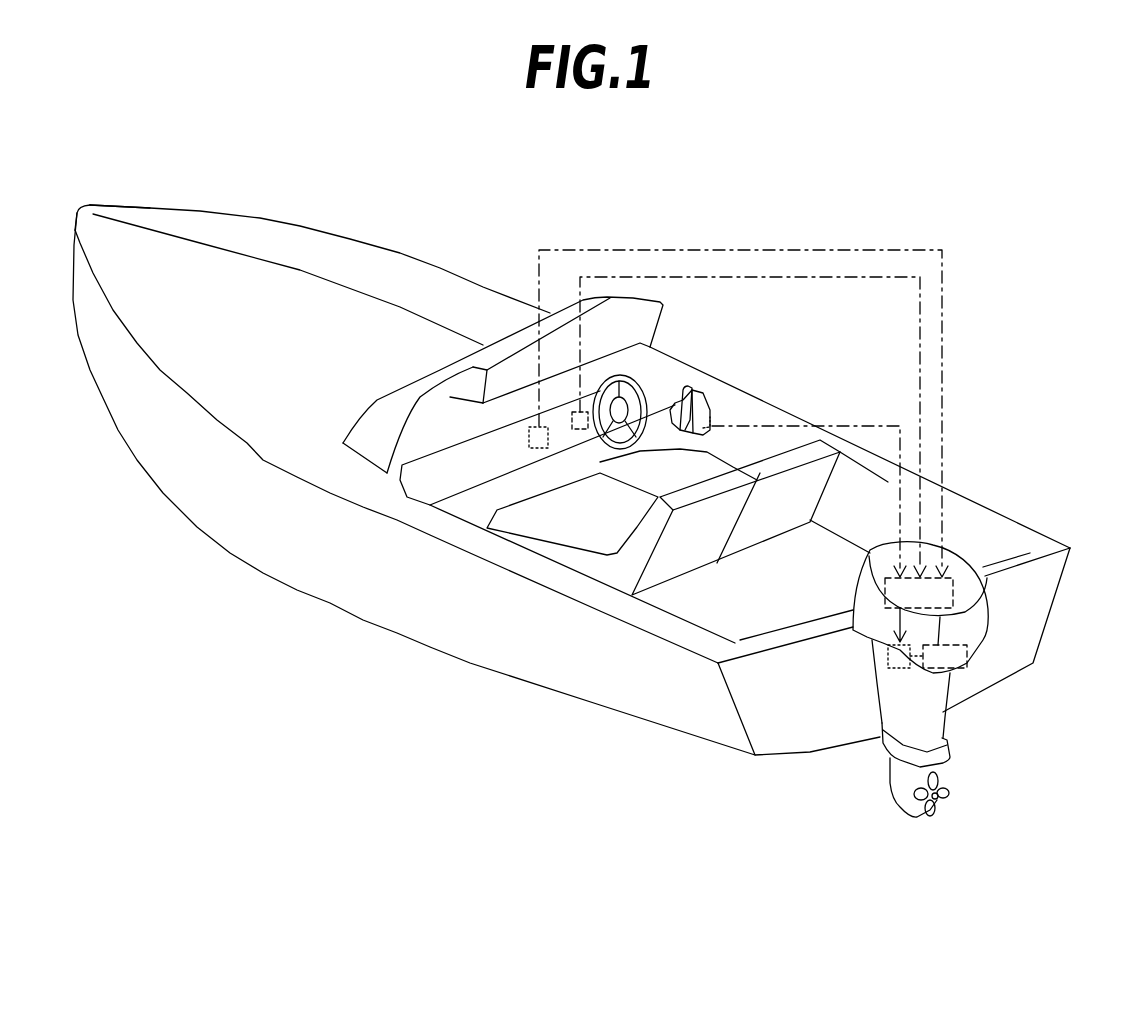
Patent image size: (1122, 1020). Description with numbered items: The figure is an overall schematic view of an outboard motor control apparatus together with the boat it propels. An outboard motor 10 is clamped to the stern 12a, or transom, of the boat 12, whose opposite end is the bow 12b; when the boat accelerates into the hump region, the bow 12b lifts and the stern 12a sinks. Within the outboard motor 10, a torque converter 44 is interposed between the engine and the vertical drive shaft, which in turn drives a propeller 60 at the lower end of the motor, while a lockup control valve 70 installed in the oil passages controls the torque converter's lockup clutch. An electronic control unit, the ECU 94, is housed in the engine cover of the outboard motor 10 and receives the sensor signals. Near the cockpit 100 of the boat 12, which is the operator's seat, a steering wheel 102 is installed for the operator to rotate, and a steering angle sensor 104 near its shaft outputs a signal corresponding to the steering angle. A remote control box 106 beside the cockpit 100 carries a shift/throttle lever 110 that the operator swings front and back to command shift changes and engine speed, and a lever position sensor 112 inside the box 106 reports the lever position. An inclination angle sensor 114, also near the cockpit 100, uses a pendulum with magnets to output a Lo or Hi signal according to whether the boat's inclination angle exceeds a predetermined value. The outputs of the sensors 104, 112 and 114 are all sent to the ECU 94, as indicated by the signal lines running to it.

The outboard motor 10 is at (993, 615).
The boat 12 is at (333, 230).
The stern 12a is at (830, 730).
The bow 12b is at (117, 213).
The torque converter 44 is at (967, 663).
The propeller 60 is at (947, 798).
The lockup control valve 70 is at (890, 660).
The electronic control unit (ECU) 94 is at (963, 567).
The cockpit 100 is at (678, 487).
The steering wheel 102 is at (638, 377).
The steering angle sensor 104 is at (579, 430).
The remote control box 106 is at (708, 400).
The shift/throttle lever 110 is at (689, 387).
The lever position sensor 112 is at (710, 410).
The inclination angle sensor 114 is at (530, 440).